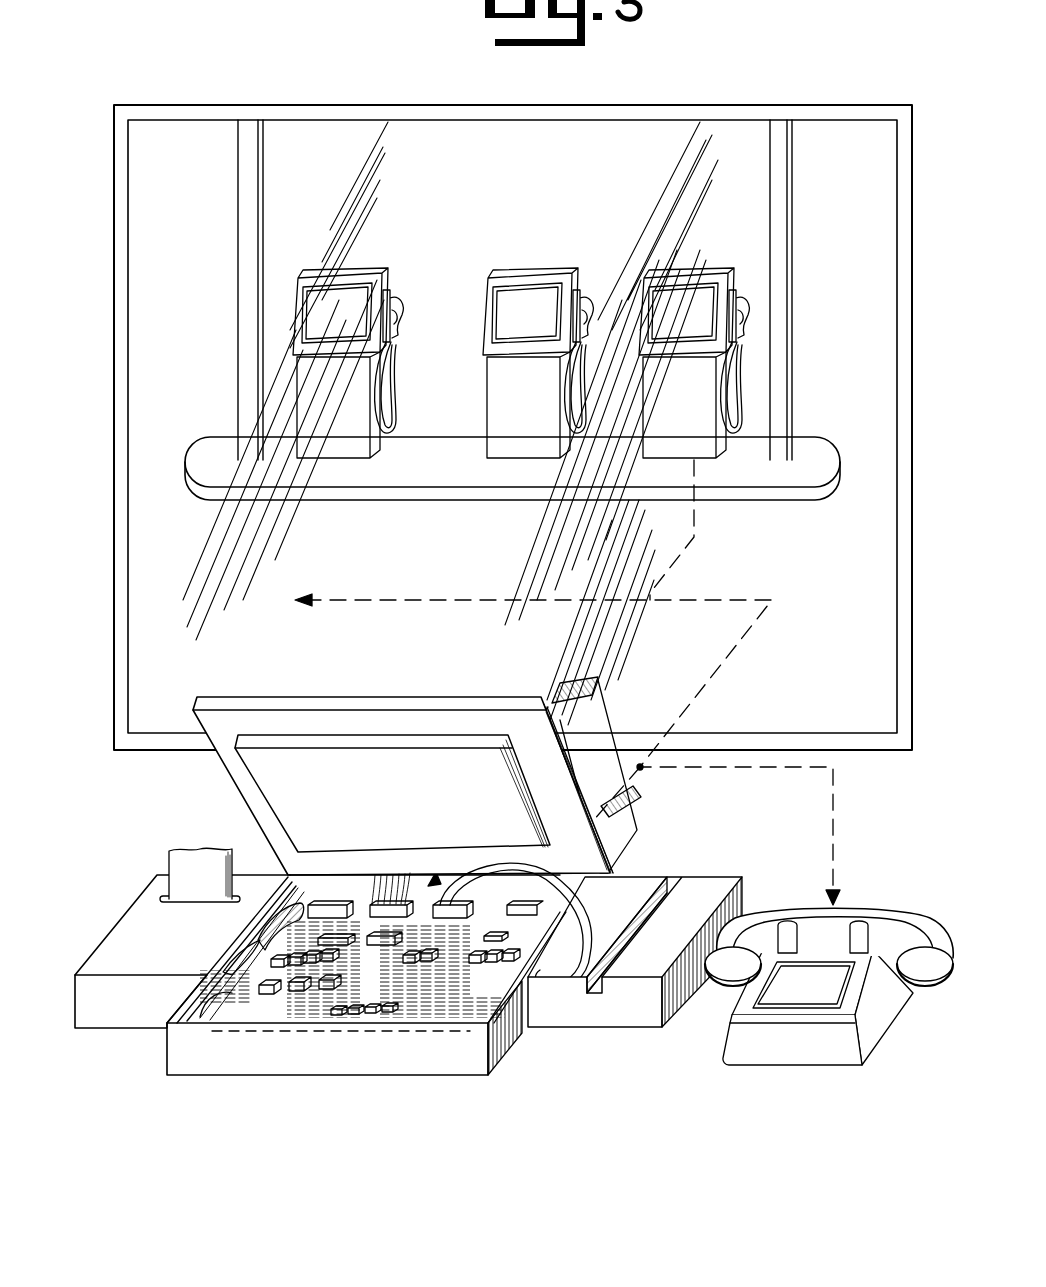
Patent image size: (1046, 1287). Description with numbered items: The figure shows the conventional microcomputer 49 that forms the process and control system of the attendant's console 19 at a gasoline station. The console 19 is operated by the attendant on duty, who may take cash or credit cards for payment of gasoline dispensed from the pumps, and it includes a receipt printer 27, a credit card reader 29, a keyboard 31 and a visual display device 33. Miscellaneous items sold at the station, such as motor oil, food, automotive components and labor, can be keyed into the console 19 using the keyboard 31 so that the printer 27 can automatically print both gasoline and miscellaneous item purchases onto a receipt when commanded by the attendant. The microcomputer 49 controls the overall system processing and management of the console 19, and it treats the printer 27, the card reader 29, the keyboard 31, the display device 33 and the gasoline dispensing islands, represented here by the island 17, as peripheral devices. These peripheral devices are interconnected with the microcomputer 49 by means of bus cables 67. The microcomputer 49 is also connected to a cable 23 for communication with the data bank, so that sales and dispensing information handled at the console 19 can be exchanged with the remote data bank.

The island 17 is at (427, 437).
The console 19 is at (381, 1008).
The cable 23 is at (413, 600).
The receipt printer 27 is at (110, 1018).
The credit card reader 29 is at (630, 1028).
The keyboard 31 is at (252, 812).
The visual display device 33 is at (640, 850).
The microcomputer 49 is at (200, 1023).
The bus cables 67 is at (568, 680).